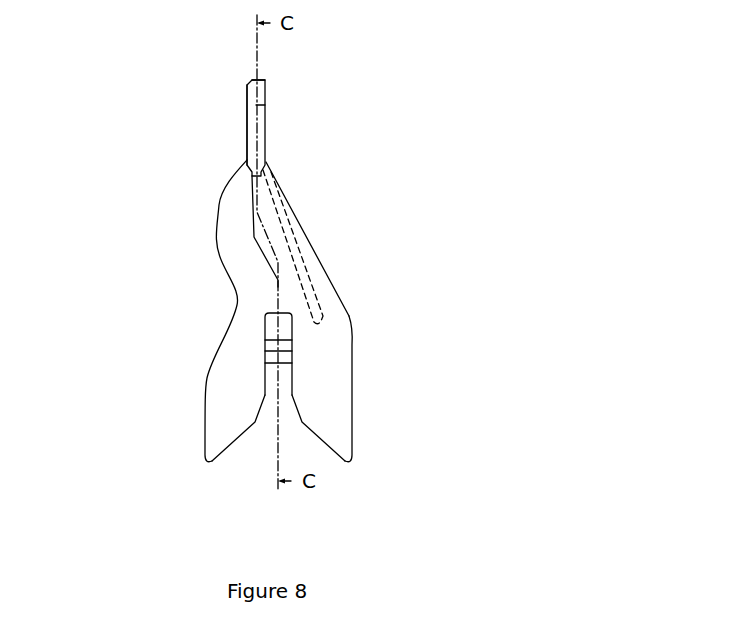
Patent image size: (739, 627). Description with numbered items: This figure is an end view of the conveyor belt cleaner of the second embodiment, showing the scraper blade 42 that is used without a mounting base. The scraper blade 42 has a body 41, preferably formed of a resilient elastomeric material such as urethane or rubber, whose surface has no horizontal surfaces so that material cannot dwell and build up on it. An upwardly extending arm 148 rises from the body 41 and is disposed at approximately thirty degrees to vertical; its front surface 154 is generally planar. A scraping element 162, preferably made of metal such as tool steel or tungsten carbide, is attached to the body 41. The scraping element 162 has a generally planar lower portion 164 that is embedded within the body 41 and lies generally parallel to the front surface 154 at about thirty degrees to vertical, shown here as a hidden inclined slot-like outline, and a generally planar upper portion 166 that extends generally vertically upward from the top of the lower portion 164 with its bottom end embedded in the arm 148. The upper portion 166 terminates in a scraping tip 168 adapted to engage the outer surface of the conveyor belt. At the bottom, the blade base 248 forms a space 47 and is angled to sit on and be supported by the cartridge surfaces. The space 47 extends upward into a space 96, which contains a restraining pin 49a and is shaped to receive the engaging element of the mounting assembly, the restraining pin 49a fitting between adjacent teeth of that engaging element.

The scraper blade 42 is at (218, 192).
The body 41 is at (345, 312).
The front surface 154 is at (297, 205).
The scraping element 162 is at (270, 133).
The scraping tip 168 is at (265, 80).
The upper portion 166 is at (252, 133).
The lower portion 164 is at (293, 275).
The arm 148 is at (245, 262).
The space 96 is at (270, 378).
The restraining pin 49a is at (280, 357).
The blade base 248 is at (318, 437).
The space 47 is at (270, 443).